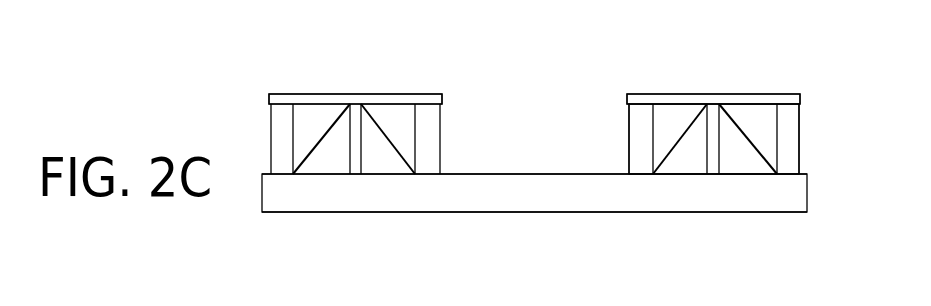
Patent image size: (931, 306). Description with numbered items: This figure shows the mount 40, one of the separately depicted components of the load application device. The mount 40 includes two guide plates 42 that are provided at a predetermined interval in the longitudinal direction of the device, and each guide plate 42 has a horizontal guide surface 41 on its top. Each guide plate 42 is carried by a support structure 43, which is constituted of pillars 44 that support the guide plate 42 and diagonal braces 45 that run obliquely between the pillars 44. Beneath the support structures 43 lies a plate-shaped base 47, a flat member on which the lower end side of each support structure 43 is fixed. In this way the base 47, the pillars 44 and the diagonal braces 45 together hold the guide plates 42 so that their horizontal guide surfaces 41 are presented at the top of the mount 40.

The mount 40 is at (546, 224).
The horizontal guide surface 41 is at (368, 94).
The guide plate 42 is at (269, 99).
The support structure 43 is at (810, 140).
The pillar 44 is at (266, 140).
The diagonal brace 45 is at (671, 157).
The plate-shaped base 47 is at (543, 174).